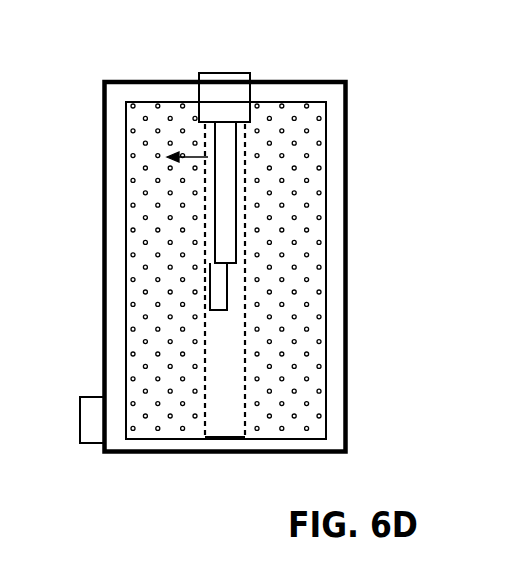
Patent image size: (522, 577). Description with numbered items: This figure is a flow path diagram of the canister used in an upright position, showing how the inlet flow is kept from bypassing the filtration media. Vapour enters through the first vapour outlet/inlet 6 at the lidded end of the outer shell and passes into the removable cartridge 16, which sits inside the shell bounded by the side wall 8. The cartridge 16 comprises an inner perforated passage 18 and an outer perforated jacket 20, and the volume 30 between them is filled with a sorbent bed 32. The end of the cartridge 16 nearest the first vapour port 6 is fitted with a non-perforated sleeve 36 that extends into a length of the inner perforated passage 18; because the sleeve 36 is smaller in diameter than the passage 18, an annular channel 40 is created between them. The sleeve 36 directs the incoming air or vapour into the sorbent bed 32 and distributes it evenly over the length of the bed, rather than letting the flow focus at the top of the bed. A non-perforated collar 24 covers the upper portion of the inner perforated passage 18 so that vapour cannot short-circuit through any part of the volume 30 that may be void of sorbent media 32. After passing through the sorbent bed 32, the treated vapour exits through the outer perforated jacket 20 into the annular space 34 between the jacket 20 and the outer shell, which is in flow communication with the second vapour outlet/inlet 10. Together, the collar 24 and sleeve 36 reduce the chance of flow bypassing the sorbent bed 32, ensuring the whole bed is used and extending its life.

The first vapour outlet/inlet 6 is at (250, 78).
The side wall 8 is at (347, 267).
The second vapour outlet/inlet 10 is at (93, 397).
The removable cartridge 16 is at (138, 212).
The inner perforated passage 18 is at (245, 415).
The outer perforated jacket 20 is at (127, 293).
The non-perforated collar 24 is at (217, 108).
The volume 30 is at (308, 95).
The sorbent bed 32 is at (303, 313).
The annular space 34 is at (335, 330).
The non-perforated sleeve 36 is at (240, 228).
The annular channel 40 is at (240, 170).